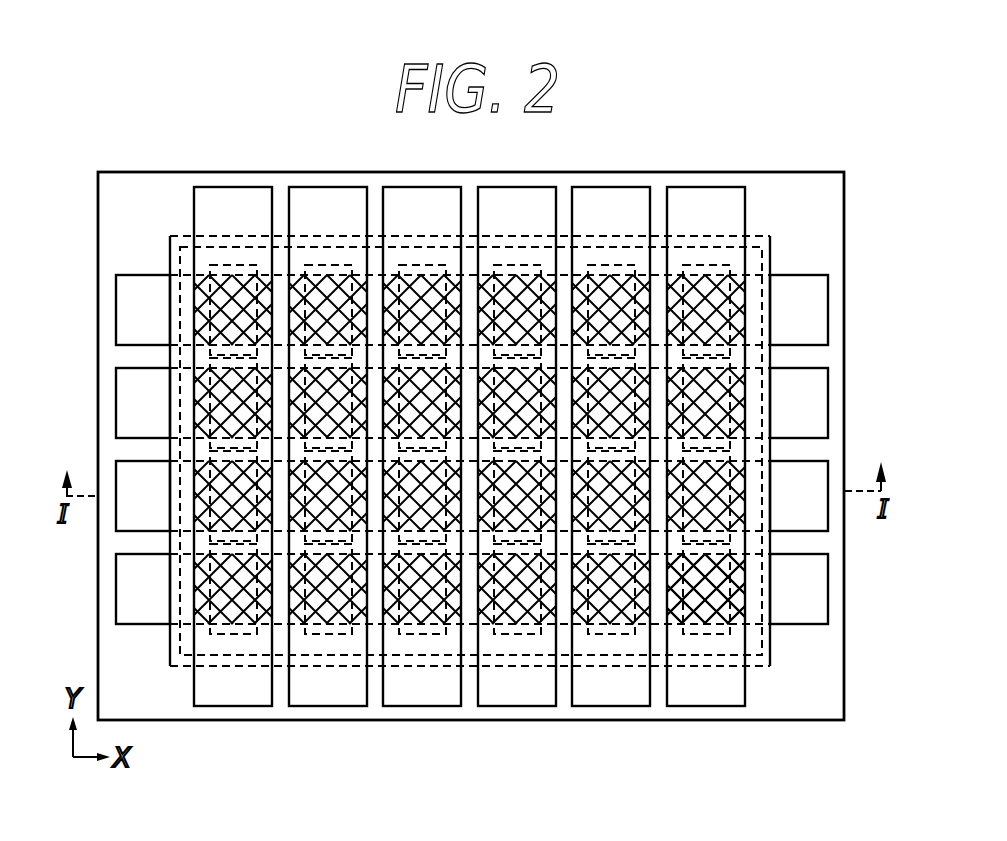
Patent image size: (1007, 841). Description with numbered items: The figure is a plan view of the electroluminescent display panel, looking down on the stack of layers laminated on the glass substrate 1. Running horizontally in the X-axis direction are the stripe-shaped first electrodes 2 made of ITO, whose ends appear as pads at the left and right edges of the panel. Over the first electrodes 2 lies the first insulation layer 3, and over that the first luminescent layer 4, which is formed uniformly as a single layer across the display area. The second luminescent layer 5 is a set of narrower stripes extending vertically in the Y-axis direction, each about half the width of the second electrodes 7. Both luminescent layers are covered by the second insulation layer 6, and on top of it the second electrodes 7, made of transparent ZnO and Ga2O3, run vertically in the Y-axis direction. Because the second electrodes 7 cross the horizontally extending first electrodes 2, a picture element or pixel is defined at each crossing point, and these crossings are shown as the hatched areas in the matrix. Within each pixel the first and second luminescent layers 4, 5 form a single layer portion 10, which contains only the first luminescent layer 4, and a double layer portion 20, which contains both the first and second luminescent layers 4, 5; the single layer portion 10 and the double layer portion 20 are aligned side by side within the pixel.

The glass substrate 1 is at (817, 247).
The first electrodes 2 is at (828, 313).
The first insulation layer 3 is at (760, 236).
The first luminescent layer 4 is at (770, 655).
The second luminescent layer 5 is at (732, 637).
The second insulation layer 6 is at (760, 236).
The second electrodes 7 is at (735, 695).
The single layer portion 10 is at (738, 573).
The double layer portion 20 is at (710, 585).